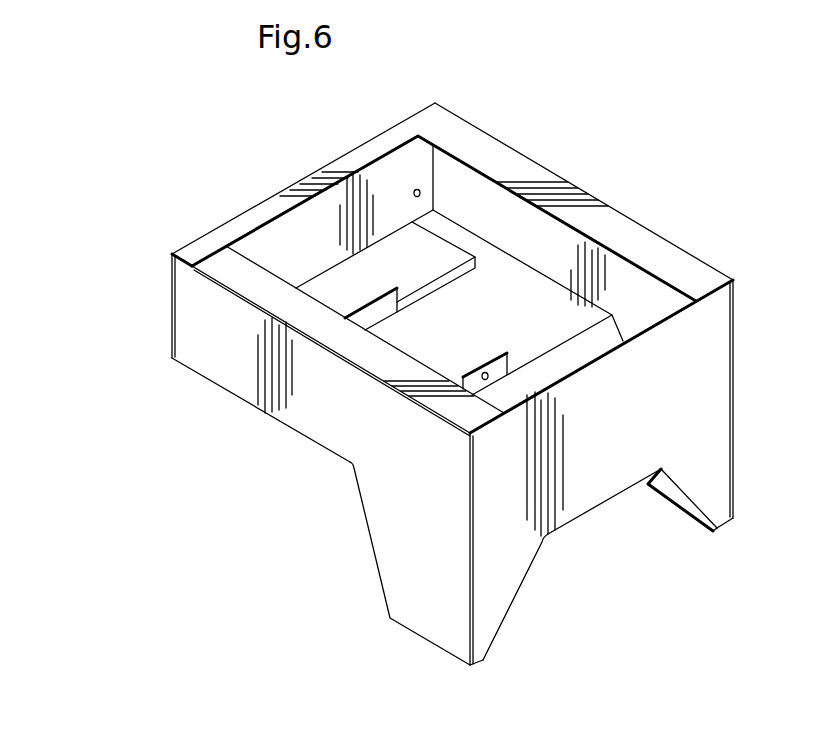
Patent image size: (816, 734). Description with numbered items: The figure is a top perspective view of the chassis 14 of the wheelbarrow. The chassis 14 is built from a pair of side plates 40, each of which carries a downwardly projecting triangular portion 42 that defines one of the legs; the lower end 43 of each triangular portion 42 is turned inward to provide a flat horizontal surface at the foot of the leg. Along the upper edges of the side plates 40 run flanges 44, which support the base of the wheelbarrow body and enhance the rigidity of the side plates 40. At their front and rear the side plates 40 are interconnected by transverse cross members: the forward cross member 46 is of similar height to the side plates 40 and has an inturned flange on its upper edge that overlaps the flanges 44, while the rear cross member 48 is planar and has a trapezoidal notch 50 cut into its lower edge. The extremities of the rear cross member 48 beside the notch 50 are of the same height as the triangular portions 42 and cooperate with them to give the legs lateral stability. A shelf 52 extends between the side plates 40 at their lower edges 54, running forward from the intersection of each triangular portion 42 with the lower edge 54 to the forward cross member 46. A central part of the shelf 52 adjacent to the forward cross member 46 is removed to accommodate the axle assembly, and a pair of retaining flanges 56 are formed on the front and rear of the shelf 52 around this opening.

The chassis 14 is at (148, 297).
The side plate 40 is at (237, 360).
The triangular portion 42 is at (407, 525).
The lower end 43 is at (660, 489).
The flange 44 is at (527, 170).
The forward cross member 46 is at (276, 180).
The rear cross member 48 is at (389, 160).
The trapezoidal notch 50 is at (567, 528).
The shelf 52 is at (444, 338).
The lower edge 54 is at (287, 432).
The retaining flange 56 is at (368, 300).